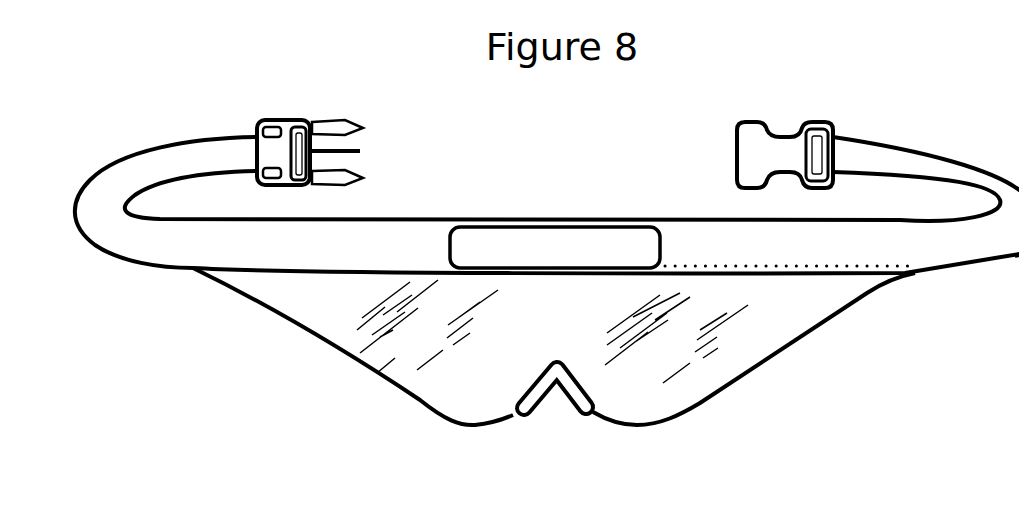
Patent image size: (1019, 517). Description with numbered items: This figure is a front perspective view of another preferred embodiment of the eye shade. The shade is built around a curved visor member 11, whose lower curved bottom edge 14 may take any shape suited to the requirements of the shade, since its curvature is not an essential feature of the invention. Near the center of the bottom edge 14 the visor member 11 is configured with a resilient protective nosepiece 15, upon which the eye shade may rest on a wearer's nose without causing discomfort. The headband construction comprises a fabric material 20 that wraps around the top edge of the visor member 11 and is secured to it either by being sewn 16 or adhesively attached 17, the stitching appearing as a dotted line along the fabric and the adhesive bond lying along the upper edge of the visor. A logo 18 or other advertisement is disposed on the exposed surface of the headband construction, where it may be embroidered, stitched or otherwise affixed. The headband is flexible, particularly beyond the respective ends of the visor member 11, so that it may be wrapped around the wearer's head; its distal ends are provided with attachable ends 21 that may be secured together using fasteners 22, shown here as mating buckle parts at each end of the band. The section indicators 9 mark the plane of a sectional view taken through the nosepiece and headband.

The section line 9- 9 is at (562, 202).
The visor member 11 is at (393, 368).
The bottom edge 14 is at (787, 350).
The resilient protective nosepiece 15 is at (522, 403).
The sewn attachment 16 is at (893, 264).
The adhesive attachment 17 is at (272, 254).
The logo 18 is at (627, 238).
The fabric material 20 is at (412, 230).
The attachable ends 21 is at (236, 92).
The fasteners 22 is at (367, 132).